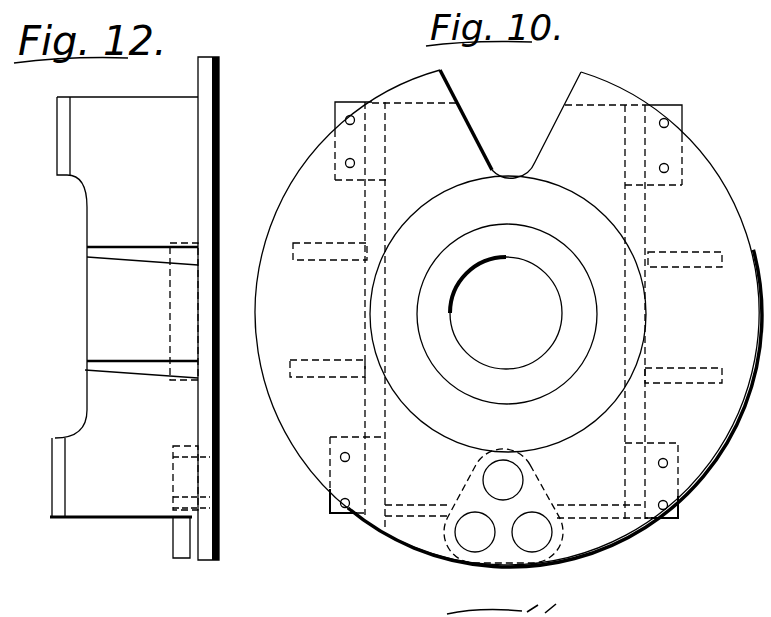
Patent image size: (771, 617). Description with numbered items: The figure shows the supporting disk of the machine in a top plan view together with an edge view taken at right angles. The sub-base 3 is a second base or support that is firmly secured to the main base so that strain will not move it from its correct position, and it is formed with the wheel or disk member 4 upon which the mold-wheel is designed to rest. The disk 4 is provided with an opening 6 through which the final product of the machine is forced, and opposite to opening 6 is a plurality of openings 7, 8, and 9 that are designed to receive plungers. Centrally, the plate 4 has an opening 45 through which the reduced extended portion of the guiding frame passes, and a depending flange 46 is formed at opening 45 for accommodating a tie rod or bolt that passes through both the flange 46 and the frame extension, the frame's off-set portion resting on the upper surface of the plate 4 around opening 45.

In FIG. 12, the sub-base 3 is at (93, 183).
In FIG. 12, the disk 4 is at (205, 489).
In FIG. 10, the disk 4 is at (297, 424).
In FIG. 10, the opening 6 is at (510, 124).
In FIG. 10, the opening 7 is at (498, 470).
In FIG. 10, the opening 8 is at (538, 545).
In FIG. 10, the opening 9 is at (475, 538).
In FIG. 10, the opening 45 is at (506, 313).
In FIG. 12, the depending flange 46 is at (180, 333).